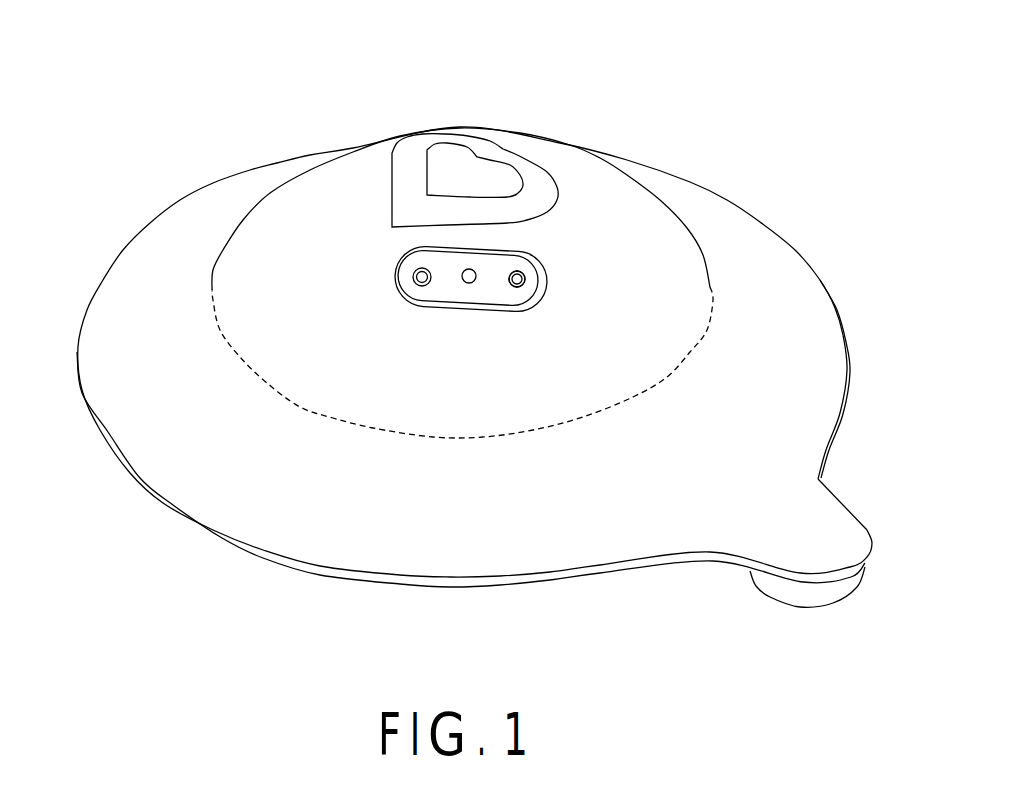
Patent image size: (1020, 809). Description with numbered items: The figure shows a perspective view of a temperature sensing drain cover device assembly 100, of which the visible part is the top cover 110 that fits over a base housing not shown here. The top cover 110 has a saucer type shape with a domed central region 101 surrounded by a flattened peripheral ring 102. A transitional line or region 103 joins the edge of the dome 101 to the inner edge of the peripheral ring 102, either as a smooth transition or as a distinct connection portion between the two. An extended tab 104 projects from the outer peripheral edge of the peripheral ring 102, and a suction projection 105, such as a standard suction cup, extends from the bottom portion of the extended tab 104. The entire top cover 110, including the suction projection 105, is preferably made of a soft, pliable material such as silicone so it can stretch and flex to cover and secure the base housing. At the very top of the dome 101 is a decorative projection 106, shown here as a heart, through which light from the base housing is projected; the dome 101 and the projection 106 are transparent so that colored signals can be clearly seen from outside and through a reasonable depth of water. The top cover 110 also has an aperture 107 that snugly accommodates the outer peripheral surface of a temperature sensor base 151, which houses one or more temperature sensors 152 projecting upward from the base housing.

The temperature sensing drain cover device assembly 100 is at (475, 359).
The domed central region 101 is at (508, 128).
The flattened peripheral ring 102 is at (700, 208).
The transitional line or region 103 is at (332, 418).
The extended tab 104 is at (833, 497).
The suction projection 105 is at (797, 607).
The decorative projection 106 is at (392, 164).
The aperture 107 is at (395, 283).
The top cover 110 is at (277, 162).
The temperature sensor base 151 is at (527, 297).
The temperature sensors 152 is at (516, 283).